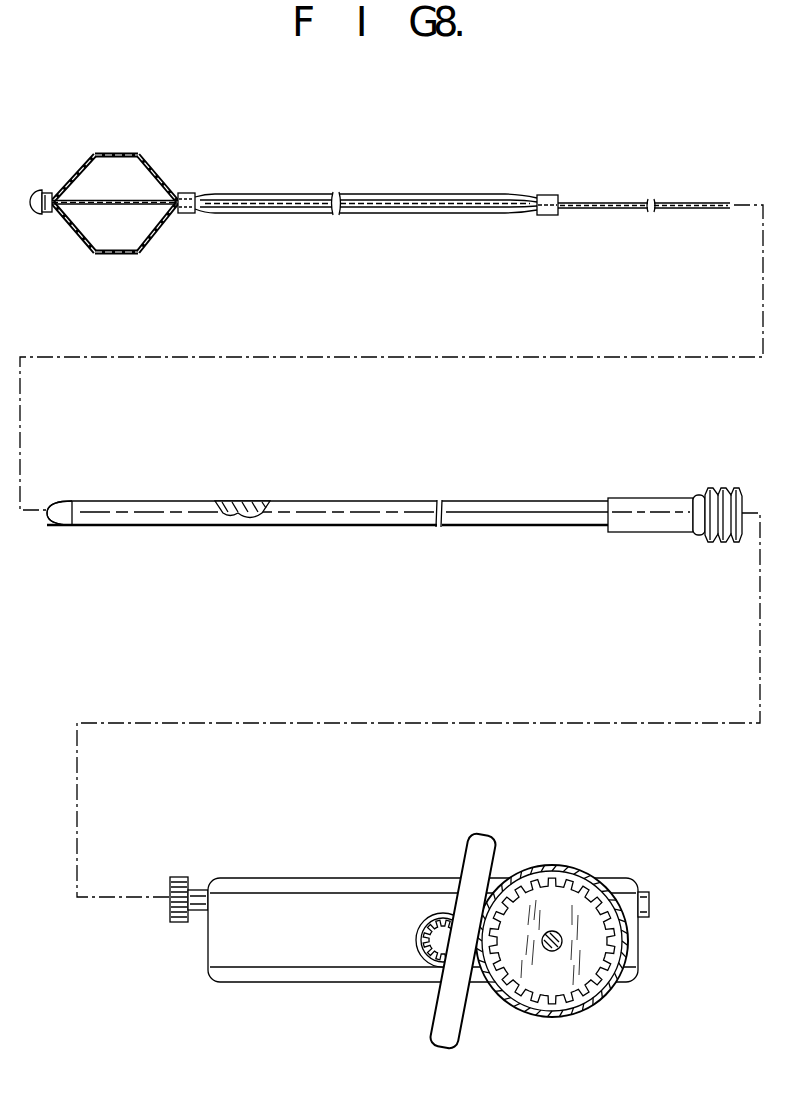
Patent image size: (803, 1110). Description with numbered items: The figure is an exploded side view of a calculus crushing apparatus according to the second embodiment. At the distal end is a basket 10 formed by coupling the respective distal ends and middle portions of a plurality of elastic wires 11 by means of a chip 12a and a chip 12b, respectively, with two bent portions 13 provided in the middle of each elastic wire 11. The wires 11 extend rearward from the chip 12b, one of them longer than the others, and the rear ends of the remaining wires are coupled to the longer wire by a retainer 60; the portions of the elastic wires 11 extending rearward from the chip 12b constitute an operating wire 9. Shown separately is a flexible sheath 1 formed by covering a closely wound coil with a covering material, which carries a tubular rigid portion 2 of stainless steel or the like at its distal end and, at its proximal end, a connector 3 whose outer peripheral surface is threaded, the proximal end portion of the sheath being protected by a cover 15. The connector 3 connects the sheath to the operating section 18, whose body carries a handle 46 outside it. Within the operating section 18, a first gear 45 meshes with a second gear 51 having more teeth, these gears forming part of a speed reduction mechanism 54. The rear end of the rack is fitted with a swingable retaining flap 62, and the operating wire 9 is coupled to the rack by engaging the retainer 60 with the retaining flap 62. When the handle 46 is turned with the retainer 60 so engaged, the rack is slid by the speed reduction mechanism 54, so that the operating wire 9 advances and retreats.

The flexible sheath 1 is at (354, 501).
The tubular rigid portion 2 is at (55, 527).
The connector 3 is at (712, 543).
The operating wire 9 is at (370, 214).
The basket 10 is at (132, 195).
The elastic wires 11 is at (160, 176).
The chip 12a is at (35, 213).
The chip 12b is at (190, 194).
The bent portions 13 is at (95, 154).
The cover 15 is at (645, 533).
The operating section 18 is at (285, 983).
The first gear 45 is at (440, 936).
The handle 46 is at (484, 836).
The second gear 51 is at (584, 982).
The speed reduction mechanism 54 is at (553, 909).
The retainer 60 is at (546, 217).
The retaining flap 62 is at (652, 906).